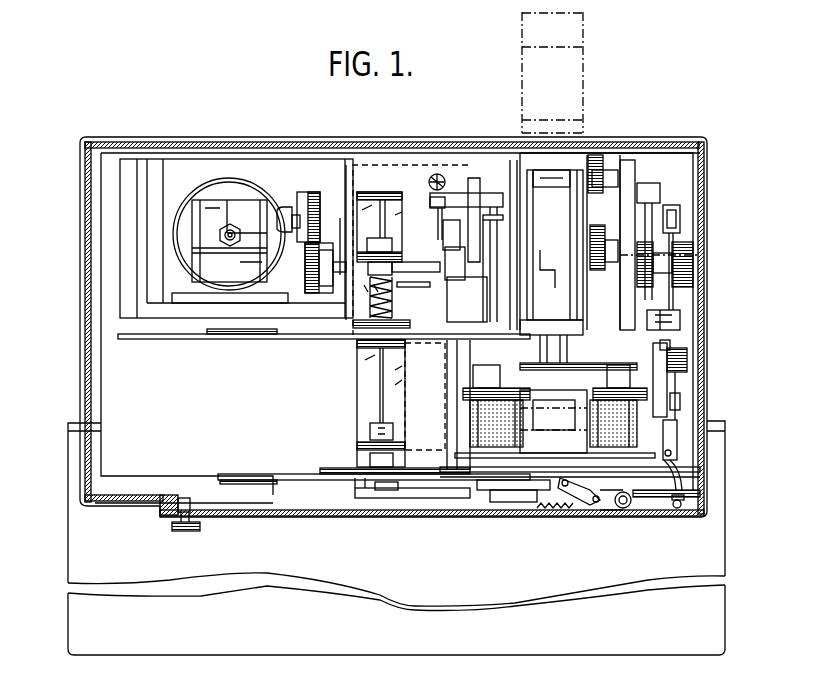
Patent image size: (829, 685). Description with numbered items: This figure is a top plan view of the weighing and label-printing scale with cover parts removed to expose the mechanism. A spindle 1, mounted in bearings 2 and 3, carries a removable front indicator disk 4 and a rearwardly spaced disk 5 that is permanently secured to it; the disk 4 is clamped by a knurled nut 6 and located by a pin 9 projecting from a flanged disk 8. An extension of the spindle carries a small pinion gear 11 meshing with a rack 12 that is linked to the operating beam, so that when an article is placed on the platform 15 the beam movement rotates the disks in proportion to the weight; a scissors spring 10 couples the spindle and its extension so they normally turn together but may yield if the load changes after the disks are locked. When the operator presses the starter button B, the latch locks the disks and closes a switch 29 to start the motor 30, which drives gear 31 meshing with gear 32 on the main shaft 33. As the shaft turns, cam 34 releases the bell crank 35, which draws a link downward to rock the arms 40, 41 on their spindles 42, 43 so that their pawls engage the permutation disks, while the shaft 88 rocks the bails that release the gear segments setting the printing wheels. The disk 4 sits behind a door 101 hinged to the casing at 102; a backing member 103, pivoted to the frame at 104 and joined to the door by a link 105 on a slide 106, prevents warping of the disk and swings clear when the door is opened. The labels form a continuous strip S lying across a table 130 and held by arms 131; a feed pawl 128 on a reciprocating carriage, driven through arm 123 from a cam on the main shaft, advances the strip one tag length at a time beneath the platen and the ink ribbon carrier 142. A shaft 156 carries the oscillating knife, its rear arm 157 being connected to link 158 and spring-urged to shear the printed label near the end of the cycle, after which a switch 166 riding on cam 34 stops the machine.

The label strip S is at (578, 82).
The platform 15 is at (232, 565).
The switch 166 is at (683, 190).
The door 101 is at (275, 517).
The motor 30 is at (207, 187).
The gear 31 is at (311, 192).
The gear 32 is at (305, 268).
The shaft 33 is at (336, 242).
The disk 5 is at (190, 340).
The spindle 1 is at (378, 212).
The bearing 2 is at (370, 441).
The bearing 3 is at (355, 343).
The knurled nut 6 is at (383, 482).
The pin 9 is at (398, 478).
The flanged disk 8 is at (355, 478).
The disk 4 is at (305, 481).
The scissors spring 10 is at (392, 311).
The pinion gear 11 is at (366, 299).
The rack 12 is at (397, 286).
The link 158 is at (429, 181).
The arm 157 is at (437, 208).
The shaft 156 is at (479, 318).
The arms 131 is at (573, 218).
The table 130 is at (610, 244).
The arm 123 is at (583, 332).
The feed pawl 128 is at (568, 354).
The cam 34 is at (690, 241).
The bell crank 35 is at (663, 215).
The switch 29 is at (682, 318).
The shaft 88 is at (683, 352).
The spindle 43 is at (688, 362).
The arm 41 is at (667, 384).
The arm 40 is at (680, 410).
The spindle 42 is at (665, 446).
The starter button B is at (677, 508).
The ink ribbon carrier 142 is at (498, 450).
The backing member 103 is at (533, 483).
The link 105 is at (578, 494).
The slide 106 is at (577, 500).
The hinge 102 is at (623, 508).
The pivot 104 is at (635, 494).